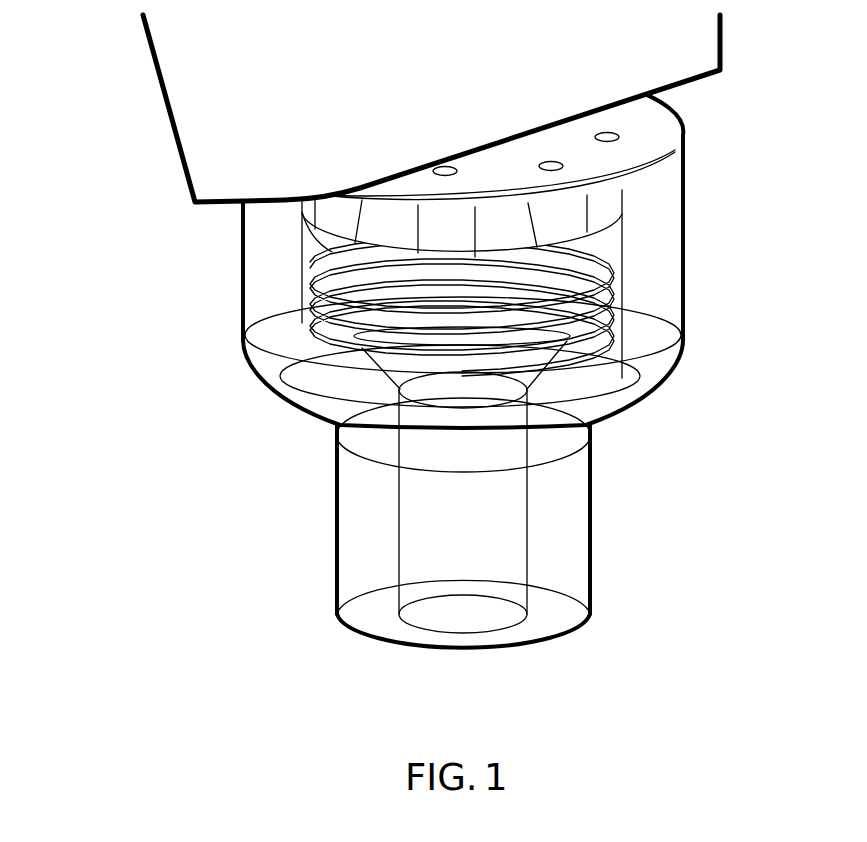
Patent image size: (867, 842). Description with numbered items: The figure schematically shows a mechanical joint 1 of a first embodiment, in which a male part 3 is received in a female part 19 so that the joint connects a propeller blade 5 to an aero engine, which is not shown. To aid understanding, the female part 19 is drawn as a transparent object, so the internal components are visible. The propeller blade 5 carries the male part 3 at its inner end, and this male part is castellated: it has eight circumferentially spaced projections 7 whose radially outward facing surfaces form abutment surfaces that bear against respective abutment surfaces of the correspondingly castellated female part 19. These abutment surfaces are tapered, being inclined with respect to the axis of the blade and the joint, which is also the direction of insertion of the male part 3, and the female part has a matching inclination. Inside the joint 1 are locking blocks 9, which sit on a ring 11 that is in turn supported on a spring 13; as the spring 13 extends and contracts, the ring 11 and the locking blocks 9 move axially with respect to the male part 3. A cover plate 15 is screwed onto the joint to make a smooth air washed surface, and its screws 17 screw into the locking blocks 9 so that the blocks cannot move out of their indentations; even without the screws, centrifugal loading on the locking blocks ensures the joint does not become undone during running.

The mechanical joint 1 is at (126, 192).
The male part 3 is at (600, 205).
The propeller blade 5 is at (198, 128).
The projections 7 is at (320, 247).
The locking blocks 9 is at (565, 222).
The ring 11 is at (610, 285).
The spring 13 is at (320, 322).
The cover plate 15 is at (650, 122).
The screws 17 is at (620, 140).
The female part 19 is at (663, 343).